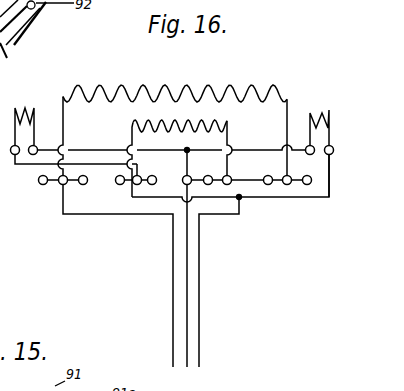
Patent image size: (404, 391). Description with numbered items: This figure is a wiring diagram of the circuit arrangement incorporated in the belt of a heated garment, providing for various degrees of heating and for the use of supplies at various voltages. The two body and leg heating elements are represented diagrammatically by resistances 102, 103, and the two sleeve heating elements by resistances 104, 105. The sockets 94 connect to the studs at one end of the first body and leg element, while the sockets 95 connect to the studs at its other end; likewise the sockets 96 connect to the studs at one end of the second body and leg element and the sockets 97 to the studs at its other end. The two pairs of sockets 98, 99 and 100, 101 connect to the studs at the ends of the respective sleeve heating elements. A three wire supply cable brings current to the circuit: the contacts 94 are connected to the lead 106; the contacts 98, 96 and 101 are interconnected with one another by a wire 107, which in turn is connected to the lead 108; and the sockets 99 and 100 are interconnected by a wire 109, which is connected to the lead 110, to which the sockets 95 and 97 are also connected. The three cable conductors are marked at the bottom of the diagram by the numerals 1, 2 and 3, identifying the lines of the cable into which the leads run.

The line 1 is at (188, 288).
The line 2 is at (137, 316).
The line 3 is at (224, 306).
The sockets 94 is at (43, 184).
The sockets 95 is at (268, 184).
The sockets 96 is at (120, 184).
The sockets 97 is at (190, 184).
The socket 98 is at (13, 155).
The socket 99 is at (38, 143).
The socket 100 is at (308, 146).
The socket 101 is at (330, 158).
The resistance 102 is at (161, 84).
The resistance 103 is at (212, 125).
The resistance 104 is at (23, 108).
The resistance 105 is at (322, 110).
The lead 106 is at (120, 288).
The wire 107 is at (31, 165).
The lead 108 is at (224, 294).
The wire 109 is at (91, 149).
The lead 110 is at (160, 288).